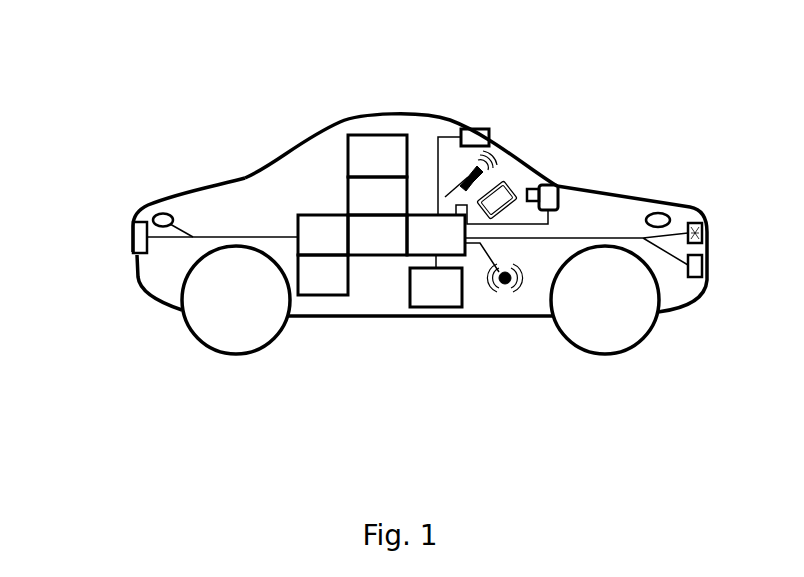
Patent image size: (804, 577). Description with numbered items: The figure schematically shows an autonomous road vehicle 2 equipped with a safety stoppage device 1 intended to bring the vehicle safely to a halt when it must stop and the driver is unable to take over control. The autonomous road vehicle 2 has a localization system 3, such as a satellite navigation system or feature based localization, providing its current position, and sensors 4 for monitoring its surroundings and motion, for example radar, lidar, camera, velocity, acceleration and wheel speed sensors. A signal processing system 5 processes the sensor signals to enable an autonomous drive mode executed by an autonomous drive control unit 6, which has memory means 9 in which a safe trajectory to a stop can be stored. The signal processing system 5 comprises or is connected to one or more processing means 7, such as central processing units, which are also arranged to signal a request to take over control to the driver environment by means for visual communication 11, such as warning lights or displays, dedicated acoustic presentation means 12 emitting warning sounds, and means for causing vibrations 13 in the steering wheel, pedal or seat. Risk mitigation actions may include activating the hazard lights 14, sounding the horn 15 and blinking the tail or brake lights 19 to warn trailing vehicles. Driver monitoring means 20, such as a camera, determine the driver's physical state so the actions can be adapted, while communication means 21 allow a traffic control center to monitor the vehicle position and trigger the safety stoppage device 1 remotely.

The safety stoppage device 1 is at (335, 184).
The autonomous road vehicle 2 is at (400, 107).
The localization system 3 is at (377, 196).
The sensors 4 is at (757, 238).
The signal processing system 5 is at (477, 204).
The autonomous drive control unit 6 is at (323, 235).
The processing means 7 is at (377, 235).
The memory means 9 is at (323, 275).
The means for visual communication 11 is at (498, 195).
The acoustic presentation means 12 is at (484, 177).
The means for causing vibrations 13 is at (507, 288).
The hazard lights 14 is at (158, 217).
The horn 15 is at (694, 223).
The tail or brake lights 19 is at (133, 232).
The driver monitoring means 20 is at (550, 186).
The communication means 21 is at (377, 156).